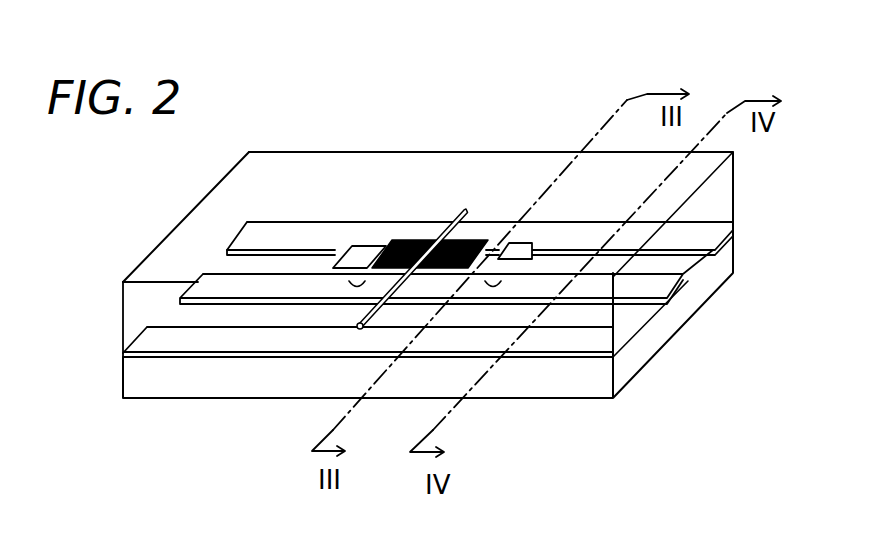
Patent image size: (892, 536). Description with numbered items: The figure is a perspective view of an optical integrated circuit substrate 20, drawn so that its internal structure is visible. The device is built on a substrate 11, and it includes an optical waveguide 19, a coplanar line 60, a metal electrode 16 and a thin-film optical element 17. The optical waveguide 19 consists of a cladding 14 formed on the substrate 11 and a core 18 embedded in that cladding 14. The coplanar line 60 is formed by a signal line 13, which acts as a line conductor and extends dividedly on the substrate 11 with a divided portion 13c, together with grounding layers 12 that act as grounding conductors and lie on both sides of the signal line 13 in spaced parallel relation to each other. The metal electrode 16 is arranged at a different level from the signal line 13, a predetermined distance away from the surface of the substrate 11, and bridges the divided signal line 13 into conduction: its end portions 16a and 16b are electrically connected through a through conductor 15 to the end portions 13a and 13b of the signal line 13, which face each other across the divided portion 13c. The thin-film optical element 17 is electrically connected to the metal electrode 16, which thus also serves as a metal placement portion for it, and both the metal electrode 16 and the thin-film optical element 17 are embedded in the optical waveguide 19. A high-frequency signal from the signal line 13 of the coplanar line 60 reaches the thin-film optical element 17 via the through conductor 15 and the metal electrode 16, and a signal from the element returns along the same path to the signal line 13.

The substrate 11 is at (593, 385).
The grounding layers 12 is at (627, 333).
The signal line 13 is at (673, 290).
The end portion of signal line 13a is at (330, 287).
The end portion of signal line 13b is at (484, 288).
The divided portion 13c is at (400, 283).
The cladding 14 is at (500, 200).
The through conductor 15 is at (355, 286).
The metal electrode 16 is at (333, 258).
The end portion of metal electrode 16a is at (363, 256).
The end portion of metal electrode 16b is at (538, 258).
The thin-film optical element 17 is at (394, 240).
The core 18 is at (457, 240).
The optical waveguide 19 is at (527, 76).
The optical integrated circuit substrate 20 is at (681, 58).
The coplanar line 60 is at (773, 302).